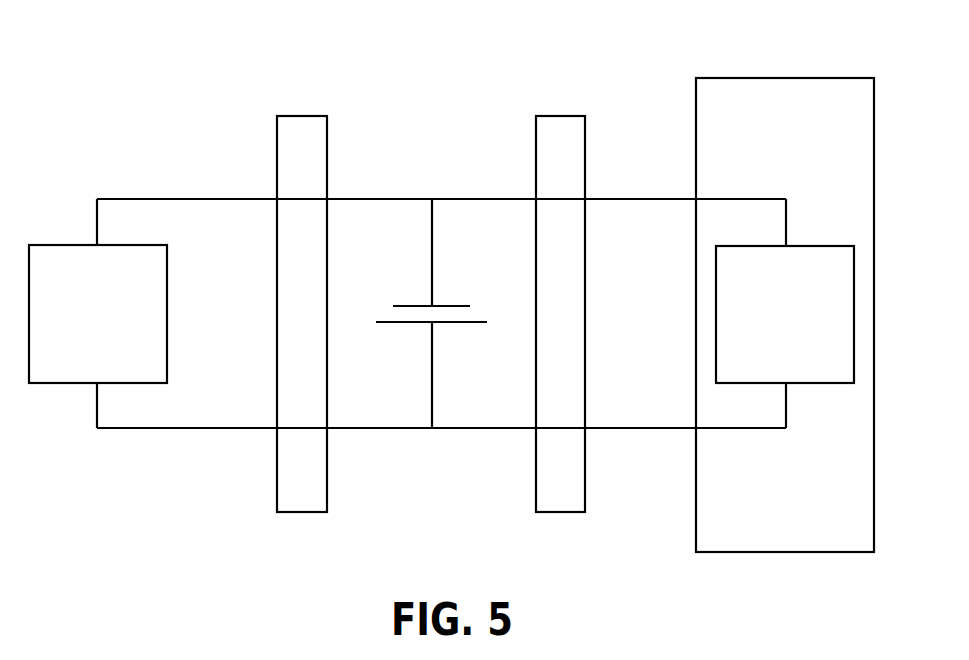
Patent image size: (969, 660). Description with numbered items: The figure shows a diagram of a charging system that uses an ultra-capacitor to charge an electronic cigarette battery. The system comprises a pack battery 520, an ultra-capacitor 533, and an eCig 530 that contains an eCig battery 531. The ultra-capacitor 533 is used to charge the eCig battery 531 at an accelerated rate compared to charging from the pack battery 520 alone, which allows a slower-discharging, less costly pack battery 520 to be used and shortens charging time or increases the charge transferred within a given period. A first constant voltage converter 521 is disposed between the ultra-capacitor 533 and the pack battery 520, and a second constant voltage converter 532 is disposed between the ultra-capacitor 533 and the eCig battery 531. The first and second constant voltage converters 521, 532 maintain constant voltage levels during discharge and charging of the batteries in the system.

The pack battery 520 is at (58, 245).
The first constant voltage converter 521 is at (303, 116).
The eCig 530 is at (786, 78).
The eCig battery 531 is at (828, 246).
The second constant voltage converter 532 is at (561, 116).
The ultra-capacitor 533 is at (409, 305).